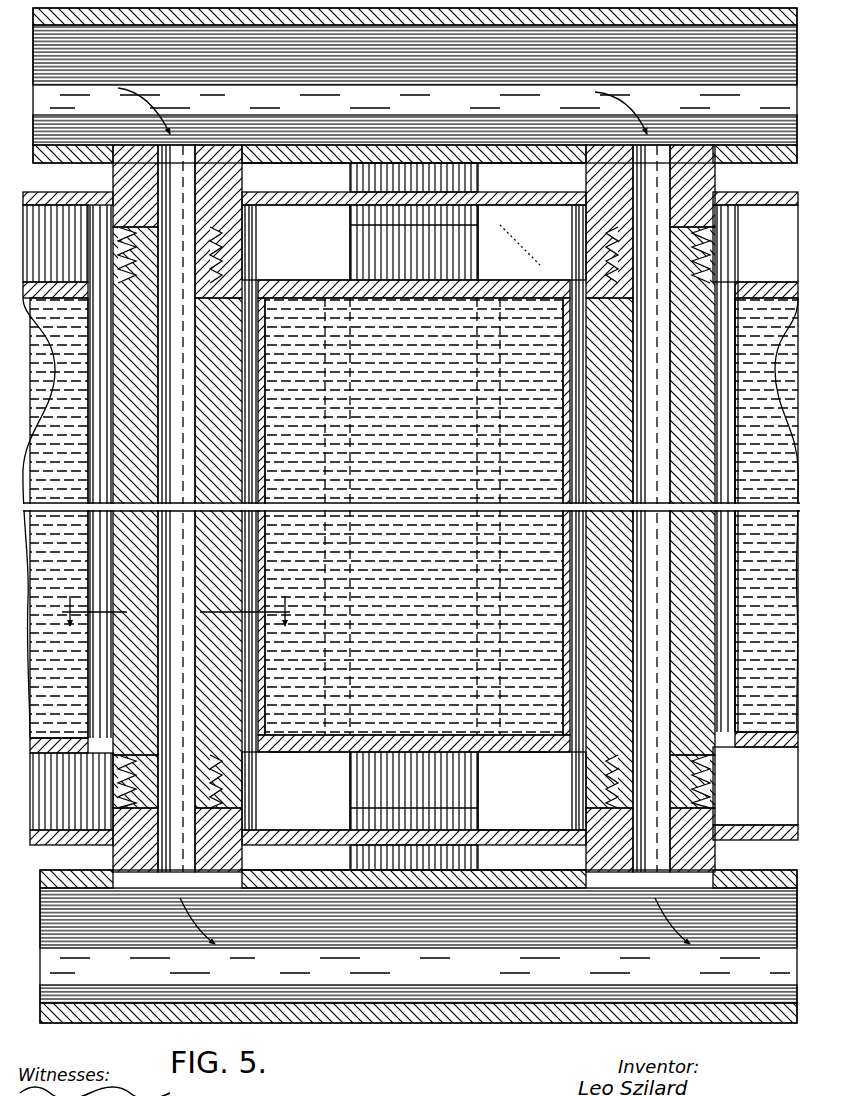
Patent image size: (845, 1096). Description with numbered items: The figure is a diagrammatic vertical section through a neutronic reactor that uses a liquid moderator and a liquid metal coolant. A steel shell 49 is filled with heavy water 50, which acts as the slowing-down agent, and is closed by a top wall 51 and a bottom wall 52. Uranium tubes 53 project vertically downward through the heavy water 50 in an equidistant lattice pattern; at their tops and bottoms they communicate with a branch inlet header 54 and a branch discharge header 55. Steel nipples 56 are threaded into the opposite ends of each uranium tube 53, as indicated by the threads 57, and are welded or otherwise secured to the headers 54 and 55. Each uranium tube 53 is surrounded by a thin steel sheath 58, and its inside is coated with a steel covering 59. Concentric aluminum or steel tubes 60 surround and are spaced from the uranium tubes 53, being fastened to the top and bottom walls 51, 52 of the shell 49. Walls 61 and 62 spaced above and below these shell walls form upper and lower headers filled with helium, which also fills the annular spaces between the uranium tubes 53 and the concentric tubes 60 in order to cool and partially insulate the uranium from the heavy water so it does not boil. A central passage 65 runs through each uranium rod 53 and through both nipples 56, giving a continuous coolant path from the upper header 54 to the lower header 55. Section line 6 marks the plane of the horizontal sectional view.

The section line 6- 6 is at (175, 611).
The steel shell 49 is at (766, 283).
The heavy water 50 is at (270, 752).
The top wall 51 is at (567, 280).
The bottom wall 52 is at (540, 746).
The uranium tube 53 is at (250, 296).
The branch inlet header 54 is at (456, 109).
The branch discharge header 55 is at (453, 979).
The steel nipple 56 is at (242, 186).
The threads 57 is at (244, 238).
The thin steel sheath 58 is at (415, 261).
The steel covering 59 is at (112, 765).
The aluminum or steel tube 60 is at (102, 278).
The upper wall 61 is at (514, 198).
The lower wall 62 is at (536, 830).
The passage 65 is at (182, 150).